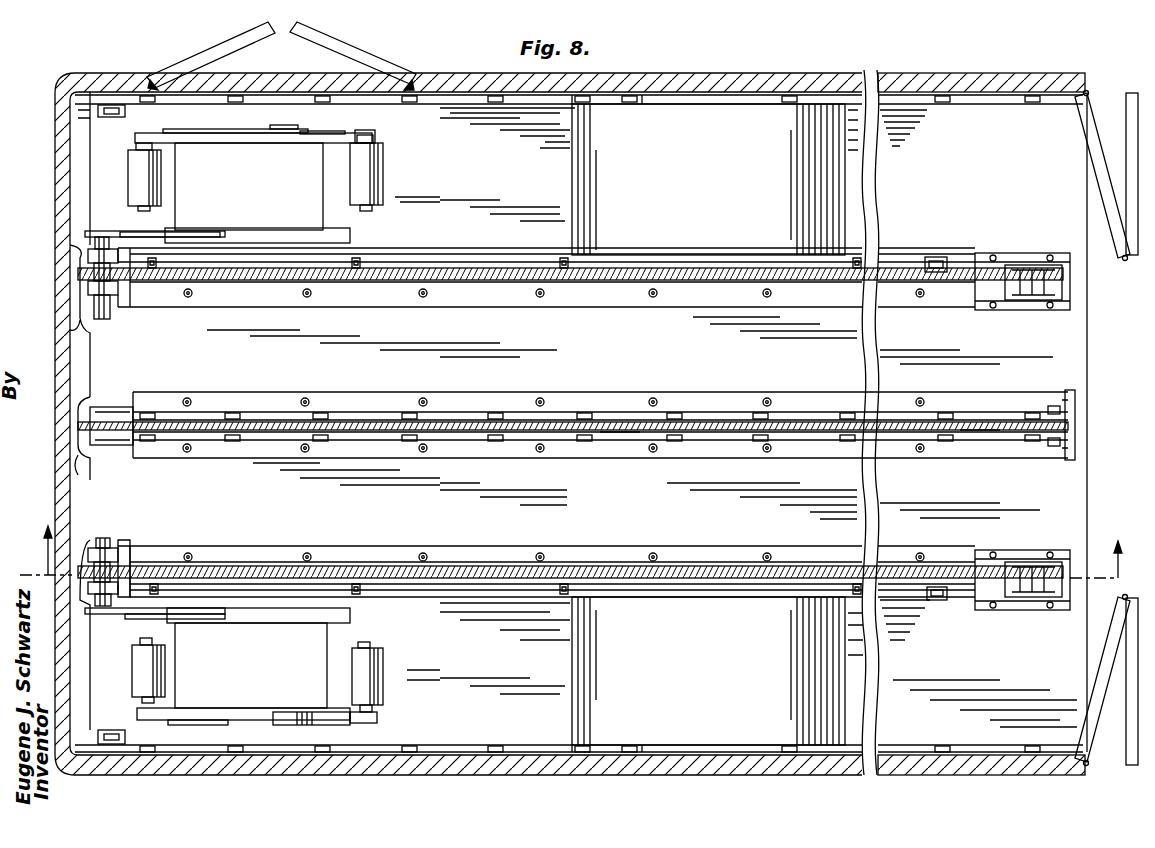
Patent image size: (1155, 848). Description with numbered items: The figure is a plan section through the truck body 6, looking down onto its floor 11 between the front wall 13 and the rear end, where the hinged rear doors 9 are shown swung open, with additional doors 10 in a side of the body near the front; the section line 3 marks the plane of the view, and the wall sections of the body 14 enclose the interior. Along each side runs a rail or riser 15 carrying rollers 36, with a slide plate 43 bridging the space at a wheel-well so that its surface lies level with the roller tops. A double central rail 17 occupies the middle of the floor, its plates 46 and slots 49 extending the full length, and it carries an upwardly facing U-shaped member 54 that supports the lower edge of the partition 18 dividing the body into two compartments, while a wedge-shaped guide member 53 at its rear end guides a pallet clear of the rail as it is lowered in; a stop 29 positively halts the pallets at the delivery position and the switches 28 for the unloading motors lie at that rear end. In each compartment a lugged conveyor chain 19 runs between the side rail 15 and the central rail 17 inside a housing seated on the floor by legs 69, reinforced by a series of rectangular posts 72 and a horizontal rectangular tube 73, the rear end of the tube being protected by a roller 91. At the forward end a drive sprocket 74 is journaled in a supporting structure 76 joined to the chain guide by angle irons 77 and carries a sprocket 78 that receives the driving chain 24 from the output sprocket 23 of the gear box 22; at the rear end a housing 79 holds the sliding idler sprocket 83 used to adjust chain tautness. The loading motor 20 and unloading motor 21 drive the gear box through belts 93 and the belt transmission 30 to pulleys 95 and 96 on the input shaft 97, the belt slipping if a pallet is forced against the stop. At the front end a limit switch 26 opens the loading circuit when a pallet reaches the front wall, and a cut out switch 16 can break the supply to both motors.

The section line 3 is at (572, 539).
The truck body 6 is at (806, 84).
The rear doors 9 is at (1128, 158).
The side doors 10 is at (208, 55).
The floor 11 is at (1088, 340).
The front wall 13 is at (70, 270).
The casing wall 14 is at (522, 76).
The side rail 15 is at (990, 105).
The cut out switch 16 is at (92, 455).
The central rail 17 is at (560, 410).
The partition 18 is at (568, 432).
The conveyor chain 19 is at (712, 282).
The loading motor 20 is at (128, 180).
The unloading motor 21 is at (383, 178).
The gear box 22 is at (330, 215).
The output sprocket 23 is at (222, 236).
The driving chain 24 is at (135, 233).
The limit switch 26 is at (108, 118).
The unloading switch 28 is at (1050, 406).
The stop 29 is at (1072, 438).
The belt transmission 30 is at (368, 132).
The roller 36 is at (630, 103).
The slide plate 43 is at (716, 104).
The rail plate 46 is at (460, 402).
The slot 49 is at (946, 412).
The wedge-shaped guide member 53 is at (985, 432).
The U-shaped member 54 is at (640, 435).
The legs 69 is at (540, 258).
The rectangular post 72 is at (360, 262).
The rectangular metal tube 73 is at (643, 262).
The drive sprocket 74 is at (124, 300).
The sprocket supporting structure 76 is at (108, 308).
The angle iron members 77 is at (140, 552).
The sprocket 78 is at (85, 234).
The chain tightening housing 79 is at (1030, 240).
The idler sprocket 83 is at (1035, 292).
The roller 91 is at (940, 257).
The driving belt 93 is at (210, 128).
The pulley 95 is at (285, 712).
The pulley 96 is at (335, 128).
The input shaft 97 is at (288, 128).